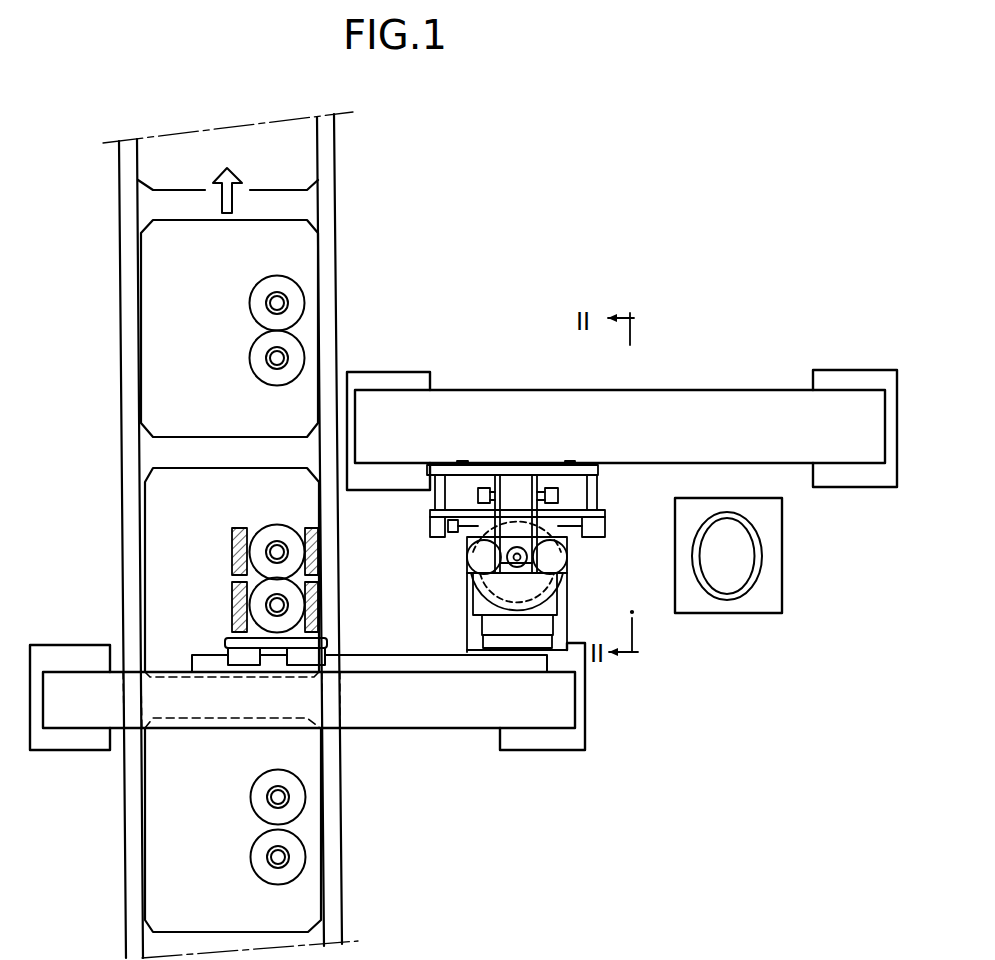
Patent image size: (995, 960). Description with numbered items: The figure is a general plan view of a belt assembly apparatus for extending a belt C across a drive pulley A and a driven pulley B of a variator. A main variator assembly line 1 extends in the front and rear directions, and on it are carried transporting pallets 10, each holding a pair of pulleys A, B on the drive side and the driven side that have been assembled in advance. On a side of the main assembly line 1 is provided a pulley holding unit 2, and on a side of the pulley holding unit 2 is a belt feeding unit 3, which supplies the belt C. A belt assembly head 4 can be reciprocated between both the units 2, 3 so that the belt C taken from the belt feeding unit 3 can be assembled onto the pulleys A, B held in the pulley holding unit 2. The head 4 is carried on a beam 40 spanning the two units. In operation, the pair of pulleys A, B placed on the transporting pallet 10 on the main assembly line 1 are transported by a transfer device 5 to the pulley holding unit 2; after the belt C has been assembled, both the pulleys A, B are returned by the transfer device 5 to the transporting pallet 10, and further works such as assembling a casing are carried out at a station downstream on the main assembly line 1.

The main variator assembly line 1 is at (137, 328).
The transporting pallet 10 is at (138, 152).
The transfer device 5 is at (226, 574).
The transfer beam 40 is at (513, 397).
The belt assembly head 4 is at (618, 529).
The pulley holding unit 2 is at (460, 577).
The belt feeding unit 3 is at (789, 595).
The drive pulley A is at (260, 358).
The driven pulley B is at (258, 300).
The belt C is at (560, 590).